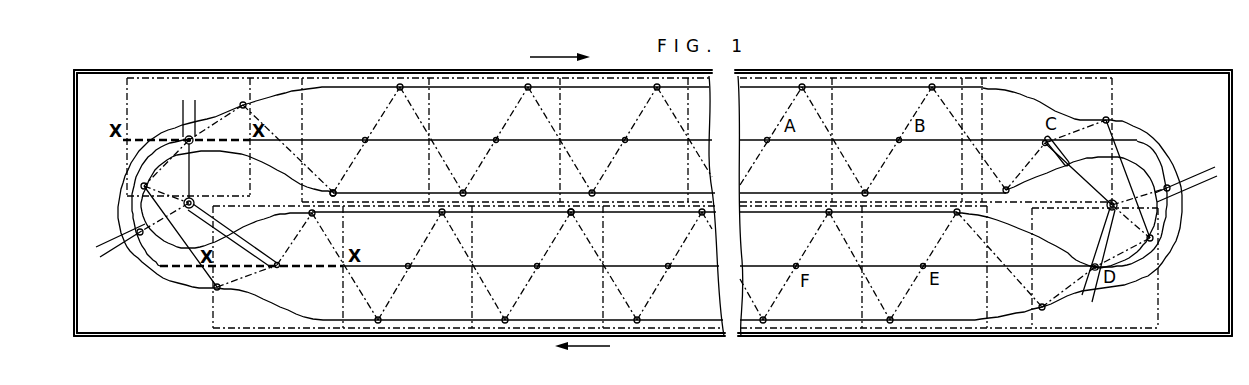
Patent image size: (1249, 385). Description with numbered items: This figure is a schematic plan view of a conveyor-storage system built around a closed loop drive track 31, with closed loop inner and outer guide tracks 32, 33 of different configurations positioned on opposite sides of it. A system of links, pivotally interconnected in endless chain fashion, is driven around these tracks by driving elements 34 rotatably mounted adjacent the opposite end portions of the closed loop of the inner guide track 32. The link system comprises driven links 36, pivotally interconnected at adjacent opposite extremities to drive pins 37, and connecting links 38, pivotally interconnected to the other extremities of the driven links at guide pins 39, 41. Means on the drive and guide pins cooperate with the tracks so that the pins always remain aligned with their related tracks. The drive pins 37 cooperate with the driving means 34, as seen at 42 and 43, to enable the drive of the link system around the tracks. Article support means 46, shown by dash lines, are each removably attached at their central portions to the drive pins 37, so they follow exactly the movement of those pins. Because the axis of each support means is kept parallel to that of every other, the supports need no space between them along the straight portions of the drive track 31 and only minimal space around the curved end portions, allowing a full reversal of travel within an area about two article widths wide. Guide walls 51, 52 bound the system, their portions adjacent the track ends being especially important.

The drive track 31 is at (578, 137).
The inner guide track 32 is at (622, 192).
The outer guide track 33 is at (650, 92).
The driving element 34 is at (194, 195).
The driven link 36 is at (391, 102).
The drive pin 37 is at (364, 137).
The connecting link 38 is at (262, 124).
The guide pin 39 is at (307, 170).
The guide pin 41 is at (422, 63).
The drive pin cooperation location 42 is at (280, 263).
The drive pin cooperation location 43 is at (187, 136).
The article support means 46 is at (176, 74).
The guide wall 51 is at (295, 72).
The guide wall 52 is at (73, 318).